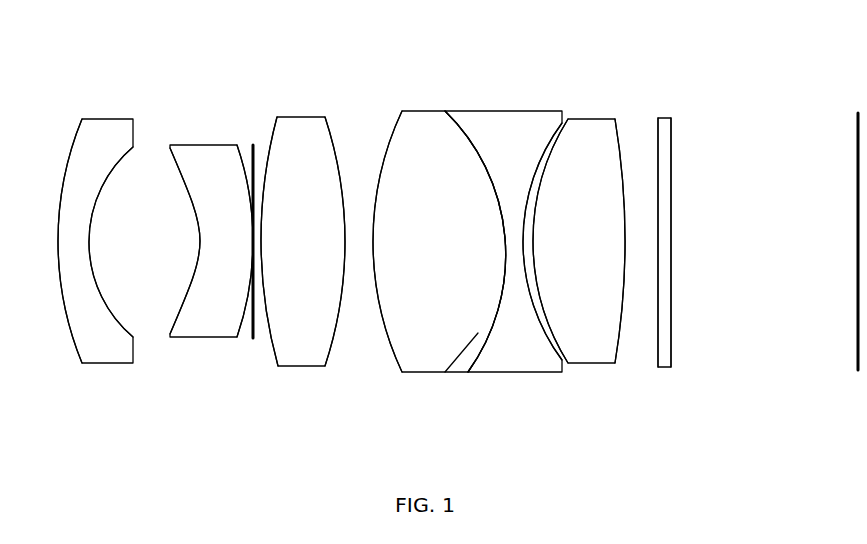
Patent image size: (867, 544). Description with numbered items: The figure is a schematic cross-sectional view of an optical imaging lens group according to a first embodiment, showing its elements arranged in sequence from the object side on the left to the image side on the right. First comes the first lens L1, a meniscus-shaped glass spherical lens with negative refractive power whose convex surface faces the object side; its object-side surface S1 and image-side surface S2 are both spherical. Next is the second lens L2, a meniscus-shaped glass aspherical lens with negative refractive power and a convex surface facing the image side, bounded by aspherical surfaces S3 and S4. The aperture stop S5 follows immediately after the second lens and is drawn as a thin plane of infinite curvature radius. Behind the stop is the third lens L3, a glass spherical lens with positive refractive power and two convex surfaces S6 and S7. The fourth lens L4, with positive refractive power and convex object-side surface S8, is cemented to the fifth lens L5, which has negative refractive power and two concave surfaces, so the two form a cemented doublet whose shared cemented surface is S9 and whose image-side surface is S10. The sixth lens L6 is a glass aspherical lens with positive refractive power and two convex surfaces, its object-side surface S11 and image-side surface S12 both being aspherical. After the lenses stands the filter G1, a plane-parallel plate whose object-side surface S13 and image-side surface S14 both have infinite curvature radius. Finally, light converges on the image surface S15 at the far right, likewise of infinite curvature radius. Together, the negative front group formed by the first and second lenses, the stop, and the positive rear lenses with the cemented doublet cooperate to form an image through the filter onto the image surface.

The first lens L1 is at (103, 140).
The second lens L2 is at (200, 152).
The third lens L3 is at (302, 143).
The fourth lens L4 is at (418, 137).
The fifth lens L5 is at (513, 140).
The sixth lens L6 is at (592, 137).
The filter G1 is at (666, 130).
The object-side surface of the first lens S1 is at (74, 342).
The image-side surface of the first lens S2 is at (118, 323).
The object-side surface of the second lens S3 is at (178, 320).
The image-side surface of the second lens S4 is at (245, 314).
The aperture stop S5 is at (253, 338).
The object-side surface of the third lens S6 is at (274, 345).
The image-side surface of the third lens S7 is at (340, 333).
The object-side surface of the fourth lens S8 is at (385, 327).
The cemented surface between the fourth lens and the fifth lens S9 is at (468, 372).
The image-side surface of the fifth lens S10 is at (545, 332).
The object-side surface of the sixth lens S11 is at (560, 350).
The image-side surface of the sixth lens S12 is at (620, 330).
The object-side surface of the filter S13 is at (658, 353).
The image-side surface of the filter S14 is at (672, 328).
The image surface S15 is at (857, 343).